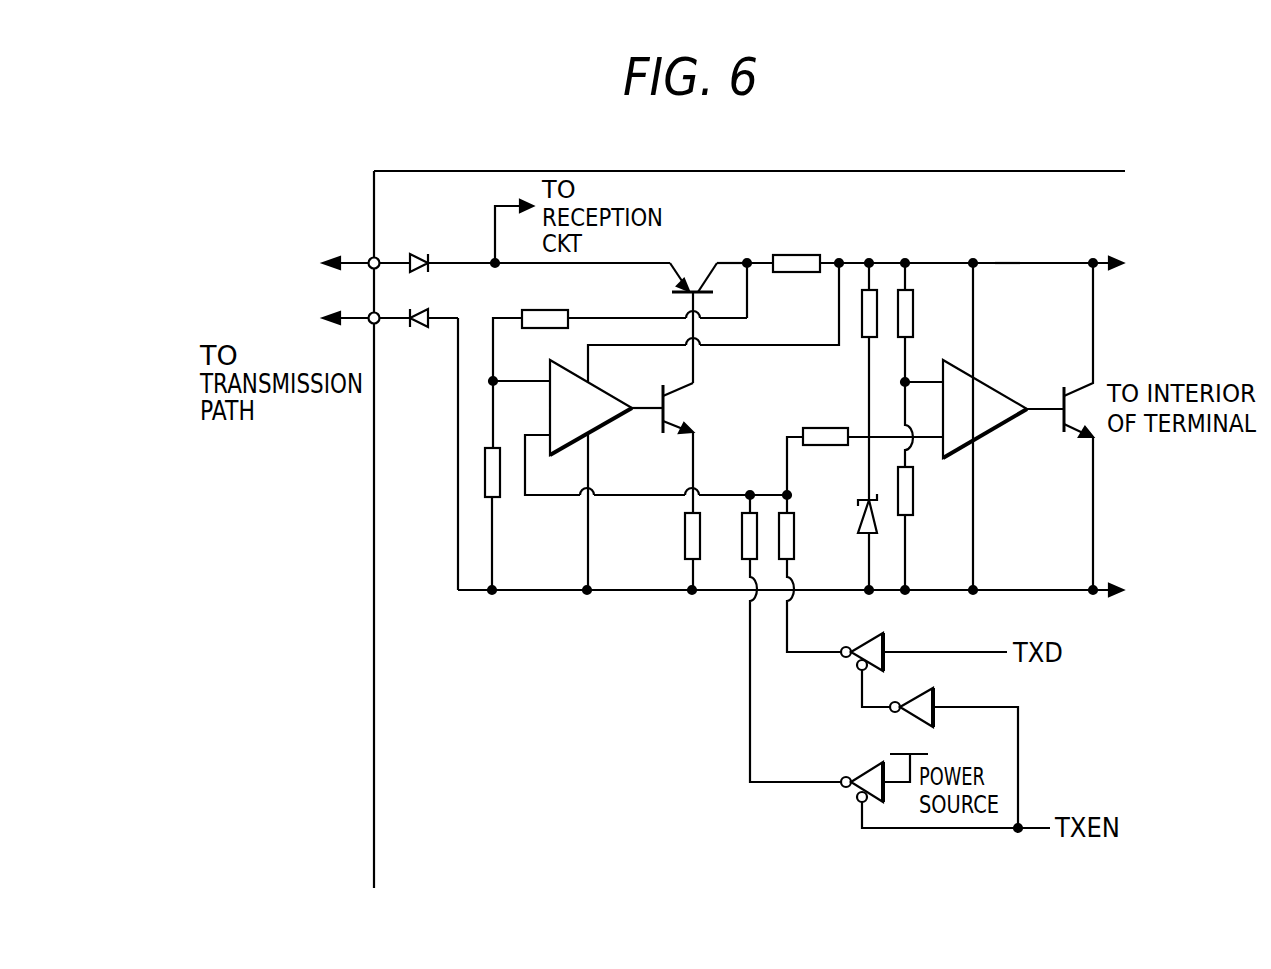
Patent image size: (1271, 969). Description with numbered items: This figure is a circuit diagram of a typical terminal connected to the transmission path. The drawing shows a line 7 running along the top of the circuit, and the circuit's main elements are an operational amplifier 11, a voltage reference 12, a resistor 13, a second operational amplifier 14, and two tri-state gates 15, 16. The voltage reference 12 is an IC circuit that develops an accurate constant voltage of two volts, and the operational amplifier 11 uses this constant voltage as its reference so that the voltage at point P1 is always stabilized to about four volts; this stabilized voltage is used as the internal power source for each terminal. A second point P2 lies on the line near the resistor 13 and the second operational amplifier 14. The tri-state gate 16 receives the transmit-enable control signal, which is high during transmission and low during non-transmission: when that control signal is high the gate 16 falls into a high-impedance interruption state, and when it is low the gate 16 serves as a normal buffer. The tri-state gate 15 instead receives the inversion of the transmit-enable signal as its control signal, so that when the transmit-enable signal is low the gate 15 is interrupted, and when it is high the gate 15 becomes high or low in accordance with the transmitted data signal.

The power supply line 7 is at (667, 171).
The point P1 is at (1013, 258).
The point P2 is at (733, 258).
The operational amplifier 11 is at (988, 383).
The voltage reference 12 is at (858, 517).
The resistor 13 is at (803, 255).
The operational amplifier 14 is at (603, 433).
The tri-state gate 15 is at (883, 643).
The tri-state gate 16 is at (853, 792).